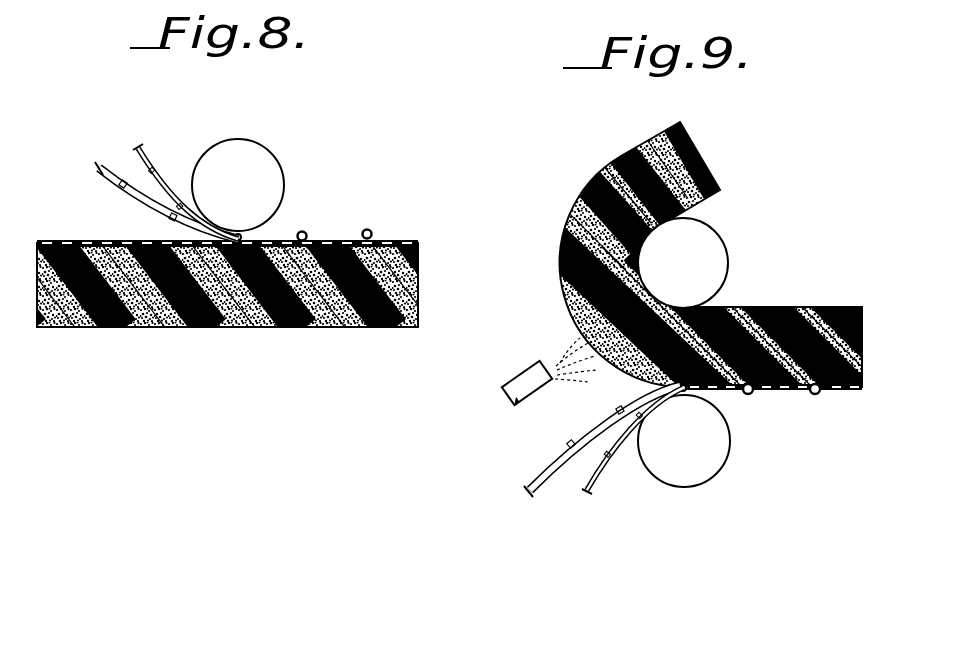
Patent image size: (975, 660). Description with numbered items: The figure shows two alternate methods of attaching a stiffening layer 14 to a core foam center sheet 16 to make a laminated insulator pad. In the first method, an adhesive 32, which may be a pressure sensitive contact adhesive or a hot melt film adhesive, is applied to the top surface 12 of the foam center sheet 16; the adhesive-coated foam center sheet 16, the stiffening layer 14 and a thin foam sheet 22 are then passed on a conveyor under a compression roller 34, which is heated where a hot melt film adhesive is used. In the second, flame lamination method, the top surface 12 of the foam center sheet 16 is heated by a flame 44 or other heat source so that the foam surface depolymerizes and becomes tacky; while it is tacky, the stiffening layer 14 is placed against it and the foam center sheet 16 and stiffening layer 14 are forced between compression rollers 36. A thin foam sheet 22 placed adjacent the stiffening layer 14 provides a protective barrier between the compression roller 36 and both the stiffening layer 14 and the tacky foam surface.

In FIG. 9, the top surface 12 is at (587, 193).
In FIG. 8, the stiffening layer 14 is at (102, 163).
In FIG. 9, the stiffening layer 14 is at (537, 478).
In FIG. 8, the foam center sheet 16 is at (62, 330).
In FIG. 9, the foam center sheet 16 is at (862, 390).
In FIG. 8, the thin foam sheet 22 is at (145, 158).
In FIG. 9, the thin foam sheet 22 is at (600, 487).
In FIG. 8, the adhesive 32 is at (108, 243).
In FIG. 8, the compression roller 34 is at (265, 175).
In FIG. 9, the compression rollers 36 is at (700, 240).
In FIG. 9, the flame 44 is at (557, 347).